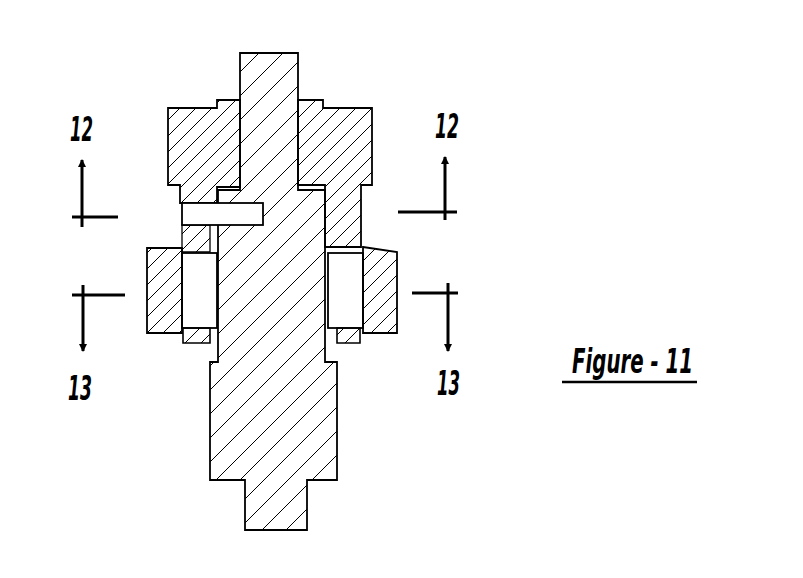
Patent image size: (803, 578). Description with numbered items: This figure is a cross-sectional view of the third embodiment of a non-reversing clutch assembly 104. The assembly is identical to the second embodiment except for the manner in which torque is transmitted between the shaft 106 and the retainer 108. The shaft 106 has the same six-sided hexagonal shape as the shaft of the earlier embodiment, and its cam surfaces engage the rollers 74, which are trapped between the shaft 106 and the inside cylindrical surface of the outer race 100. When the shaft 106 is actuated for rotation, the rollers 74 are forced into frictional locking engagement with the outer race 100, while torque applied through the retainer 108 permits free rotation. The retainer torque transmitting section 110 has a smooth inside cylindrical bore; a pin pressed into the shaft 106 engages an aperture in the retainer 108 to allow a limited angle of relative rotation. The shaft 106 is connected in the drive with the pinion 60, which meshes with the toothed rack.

The pinion 60 is at (212, 445).
The rollers 74 is at (198, 313).
The outer race 100 is at (380, 312).
The non-reversing clutch assembly 104 is at (388, 65).
The shaft 106 is at (308, 240).
The retainer 108 is at (345, 340).
The retainer torque transmitting section 110 is at (340, 192).